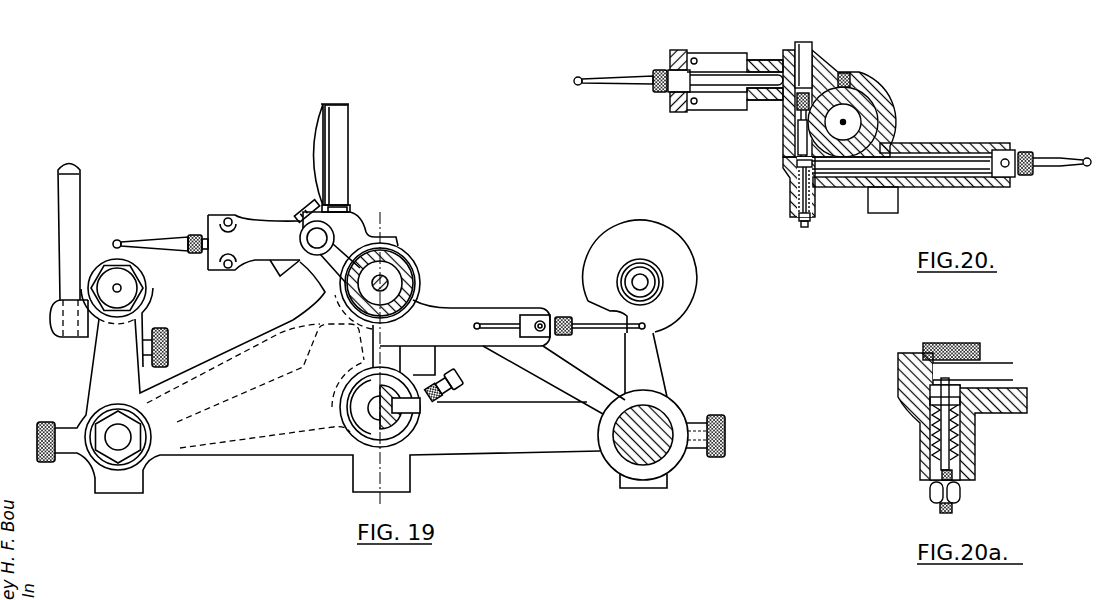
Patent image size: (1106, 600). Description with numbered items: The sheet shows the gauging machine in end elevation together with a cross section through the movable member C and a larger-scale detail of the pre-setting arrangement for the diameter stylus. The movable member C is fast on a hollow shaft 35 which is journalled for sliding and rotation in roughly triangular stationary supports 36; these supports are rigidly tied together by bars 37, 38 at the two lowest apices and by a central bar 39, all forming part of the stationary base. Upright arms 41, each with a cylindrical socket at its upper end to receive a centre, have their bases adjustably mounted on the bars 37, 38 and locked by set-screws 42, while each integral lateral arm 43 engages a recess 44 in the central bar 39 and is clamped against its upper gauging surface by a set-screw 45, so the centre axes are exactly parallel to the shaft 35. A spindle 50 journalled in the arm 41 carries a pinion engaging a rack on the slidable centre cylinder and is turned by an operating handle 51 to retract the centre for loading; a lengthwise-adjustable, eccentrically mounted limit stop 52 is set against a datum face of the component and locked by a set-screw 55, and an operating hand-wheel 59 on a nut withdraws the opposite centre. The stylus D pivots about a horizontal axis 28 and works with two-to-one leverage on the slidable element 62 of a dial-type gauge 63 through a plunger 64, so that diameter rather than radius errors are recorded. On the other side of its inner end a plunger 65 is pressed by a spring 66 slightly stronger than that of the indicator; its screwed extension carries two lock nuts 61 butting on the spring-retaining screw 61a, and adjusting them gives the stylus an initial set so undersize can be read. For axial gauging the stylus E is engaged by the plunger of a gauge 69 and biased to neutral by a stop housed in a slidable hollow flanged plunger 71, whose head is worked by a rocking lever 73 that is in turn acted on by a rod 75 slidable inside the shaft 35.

In FIG. 20, the horizontal axis 28 is at (1003, 150).
In FIG. 19, the hollow shaft 35 is at (400, 255).
In FIG. 20, the hollow shaft 35 is at (866, 108).
In FIG. 19, the stationary support 36 is at (333, 300).
In FIG. 19, the bar 37 is at (122, 442).
In FIG. 19, the bar 38 is at (648, 420).
In FIG. 19, the central bar 39 is at (365, 412).
In FIG. 19, the upright arm 41 is at (108, 378).
In FIG. 19, the set-screw 42 is at (50, 462).
In FIG. 19, the lateral arm 43 is at (497, 437).
In FIG. 19, the recess 44 is at (415, 408).
In FIG. 19, the set-screw 45 is at (465, 380).
In FIG. 19, the spindle 50 is at (55, 302).
In FIG. 19, the operating handle 51 is at (80, 170).
In FIG. 19, the limit stop 52 is at (150, 315).
In FIG. 19, the set-screw 55 is at (165, 350).
In FIG. 19, the operating hand-wheel 59 is at (695, 272).
In FIG. 20A, the lock nuts 61 is at (958, 495).
In FIG. 20A, the spring-retaining screw 61a is at (920, 478).
In FIG. 20, the slidable element 62 is at (790, 100).
In FIG. 19, the dial-type gauge 63 is at (336, 168).
In FIG. 20, the dial-type gauge 63 is at (803, 65).
In FIG. 20, the plunger 64 is at (790, 143).
In FIG. 20, the plunger 65 is at (790, 175).
In FIG. 20A, the plunger 65 is at (900, 403).
In FIG. 20, the spring 66 is at (790, 200).
In FIG. 20A, the spring 66 is at (957, 433).
In FIG. 19, the gauge 69 is at (308, 203).
In FIG. 19, the slidable hollow flanged plunger 71 is at (312, 245).
In FIG. 19, the rocking lever 73 is at (305, 224).
In FIG. 19, the rod 75 is at (386, 283).
In FIG. 19, the movable member C is at (357, 227).
In FIG. 20, the movable member C is at (824, 70).
In FIG. 19, the stylus D is at (597, 325).
In FIG. 20, the stylus D is at (1043, 160).
In FIG. 20A, the stylus D is at (1000, 372).
In FIG. 19, the stylus E is at (172, 243).
In FIG. 20, the stylus E is at (640, 82).